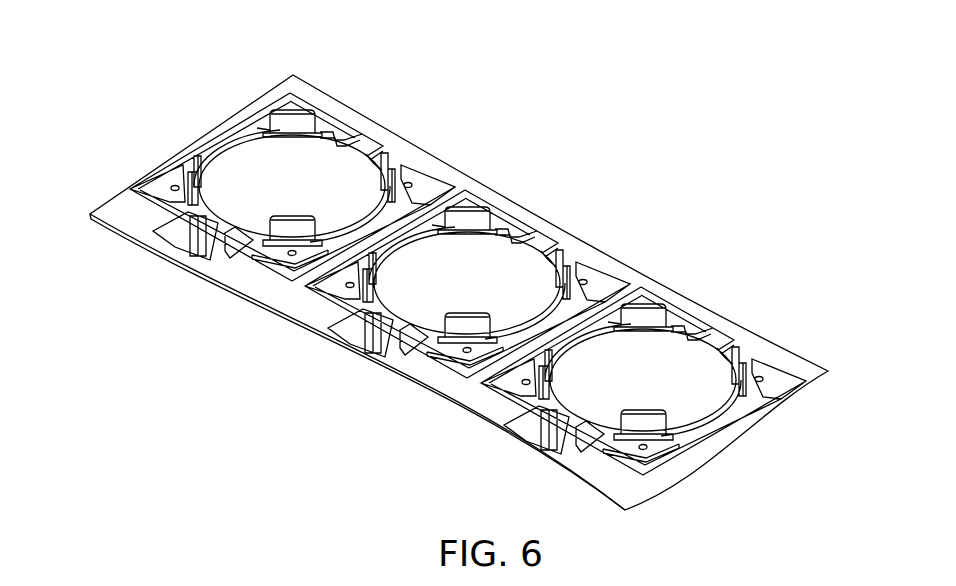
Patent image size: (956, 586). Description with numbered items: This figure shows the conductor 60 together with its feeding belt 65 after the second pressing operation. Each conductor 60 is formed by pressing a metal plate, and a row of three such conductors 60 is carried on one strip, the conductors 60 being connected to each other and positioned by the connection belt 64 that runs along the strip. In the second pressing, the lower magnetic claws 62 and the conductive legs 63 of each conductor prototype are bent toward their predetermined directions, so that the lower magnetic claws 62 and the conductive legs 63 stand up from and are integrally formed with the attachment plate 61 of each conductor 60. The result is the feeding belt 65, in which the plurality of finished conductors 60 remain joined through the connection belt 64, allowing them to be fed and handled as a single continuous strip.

The conductor 60 is at (383, 115).
The attachment plate 61 is at (219, 150).
The lower magnetic claw 62 is at (292, 118).
The conductive leg 63 is at (198, 238).
The connection belt 64 is at (445, 170).
The feeding belt 65 is at (700, 207).